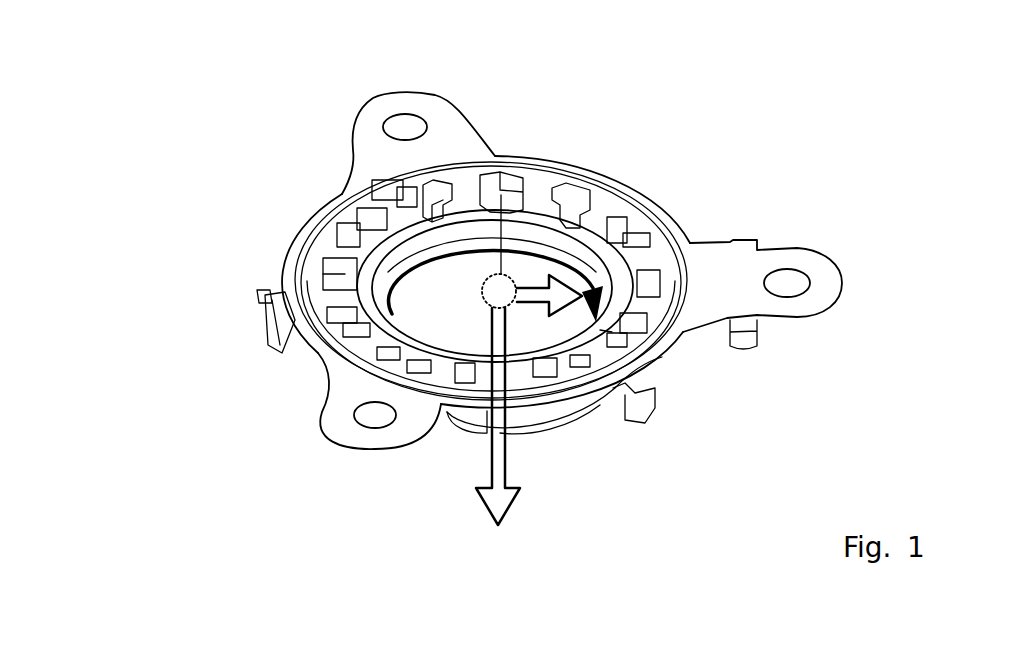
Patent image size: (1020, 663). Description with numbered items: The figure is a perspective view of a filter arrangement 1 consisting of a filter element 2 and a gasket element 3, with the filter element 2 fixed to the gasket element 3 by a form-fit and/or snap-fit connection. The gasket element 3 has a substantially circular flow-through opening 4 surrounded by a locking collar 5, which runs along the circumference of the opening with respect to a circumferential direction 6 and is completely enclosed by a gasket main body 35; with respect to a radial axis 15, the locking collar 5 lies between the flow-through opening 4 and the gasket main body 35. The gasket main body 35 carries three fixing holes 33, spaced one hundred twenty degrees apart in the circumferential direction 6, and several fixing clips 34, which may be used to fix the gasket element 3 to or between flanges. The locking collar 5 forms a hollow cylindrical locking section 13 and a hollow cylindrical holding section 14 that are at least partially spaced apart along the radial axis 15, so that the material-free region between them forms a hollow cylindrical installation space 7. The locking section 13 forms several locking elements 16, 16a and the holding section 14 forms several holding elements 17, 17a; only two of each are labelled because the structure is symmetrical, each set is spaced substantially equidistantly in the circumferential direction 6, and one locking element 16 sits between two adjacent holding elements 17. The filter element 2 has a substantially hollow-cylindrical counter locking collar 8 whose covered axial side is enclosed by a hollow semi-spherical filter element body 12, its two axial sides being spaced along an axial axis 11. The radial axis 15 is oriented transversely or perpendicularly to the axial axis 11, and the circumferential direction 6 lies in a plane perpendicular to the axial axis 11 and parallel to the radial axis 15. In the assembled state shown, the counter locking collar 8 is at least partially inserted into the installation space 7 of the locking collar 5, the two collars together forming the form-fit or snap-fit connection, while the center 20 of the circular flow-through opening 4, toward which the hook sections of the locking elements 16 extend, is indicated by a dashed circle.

The filter arrangement 1 is at (83, 67).
The filter element 2 is at (797, 400).
The gasket element 3 is at (293, 223).
The circular flow-through opening 4 is at (379, 284).
The locking collar 5 is at (780, 15).
The circumferential direction 6 is at (389, 297).
The hollow cylindrical installation space 7 is at (623, 240).
The counter locking collar 8 is at (607, 336).
The axial axis 11 is at (497, 499).
The filter element body 12 is at (555, 418).
The hollow cylindrical locking section 13 is at (705, 0).
The hollow cylindrical holding section 14 is at (705, 93).
The radial axis 15 is at (565, 296).
The locking element 16 is at (421, 190).
The locking element 16a is at (507, 174).
The holding element 17 is at (540, 211).
The holding element 17a is at (598, 237).
The center of the circular flow-through opening 20 is at (496, 296).
The fixing hole 33 is at (375, 417).
The fixing clip 34 is at (268, 333).
The gasket main body 35 is at (368, 164).